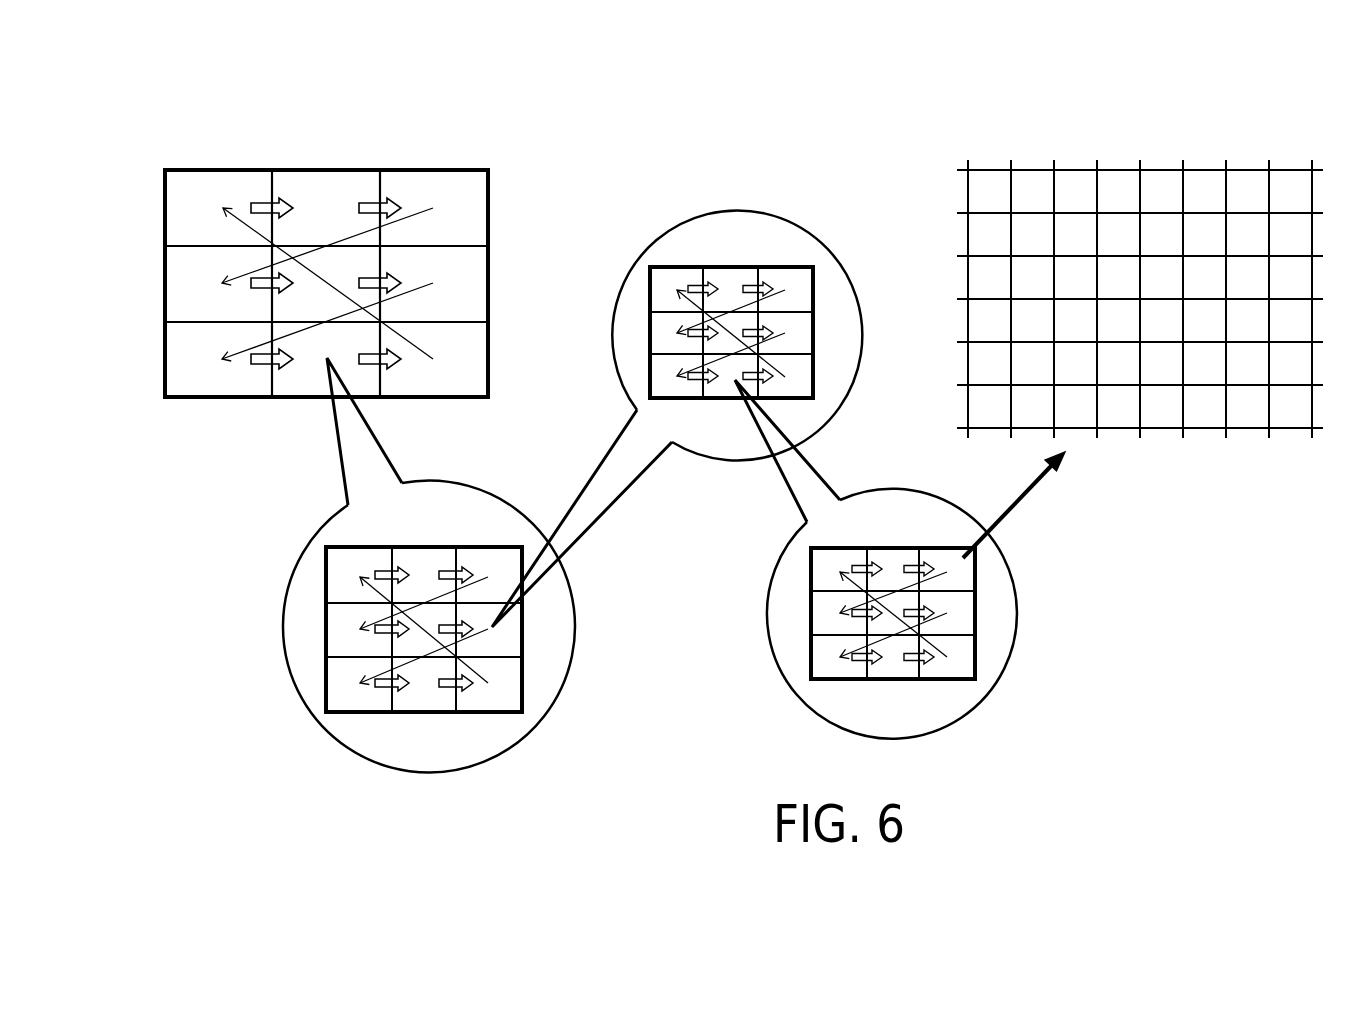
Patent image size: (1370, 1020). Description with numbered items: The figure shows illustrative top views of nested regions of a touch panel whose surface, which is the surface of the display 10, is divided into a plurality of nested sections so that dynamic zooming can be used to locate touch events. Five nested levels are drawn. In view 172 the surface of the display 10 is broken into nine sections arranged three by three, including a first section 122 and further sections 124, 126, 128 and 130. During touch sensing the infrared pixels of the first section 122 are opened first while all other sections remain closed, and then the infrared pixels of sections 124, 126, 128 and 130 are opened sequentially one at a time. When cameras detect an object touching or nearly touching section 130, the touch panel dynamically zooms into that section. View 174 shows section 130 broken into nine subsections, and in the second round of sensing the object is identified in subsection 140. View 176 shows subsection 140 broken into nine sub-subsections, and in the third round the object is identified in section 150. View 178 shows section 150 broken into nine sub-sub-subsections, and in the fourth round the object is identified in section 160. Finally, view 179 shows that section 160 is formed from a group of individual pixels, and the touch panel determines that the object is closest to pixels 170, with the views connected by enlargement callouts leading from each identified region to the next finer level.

The display 10 is at (450, 170).
The first section 122 is at (209, 196).
The section 124 is at (316, 196).
The section 126 is at (426, 196).
The section 128 is at (209, 274).
The section 130 is at (353, 553).
The subsection 140 is at (656, 370).
The section 150 is at (727, 390).
The section 160 is at (963, 568).
The pixels 170 is at (1290, 422).
The view 172 is at (207, 158).
The view 174 is at (535, 751).
The view 176 is at (660, 207).
The view 178 is at (998, 707).
The view 179 is at (1012, 148).